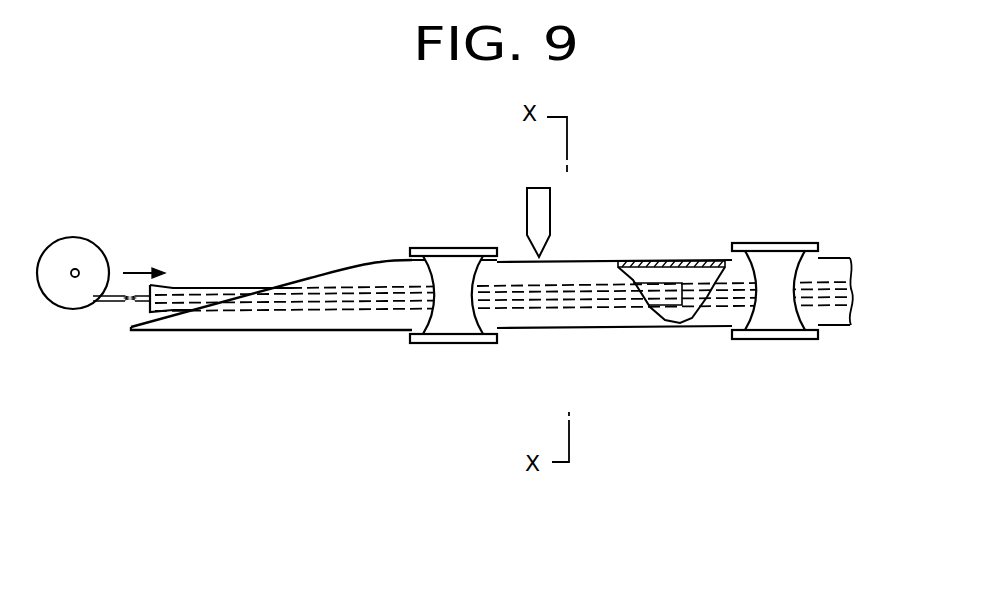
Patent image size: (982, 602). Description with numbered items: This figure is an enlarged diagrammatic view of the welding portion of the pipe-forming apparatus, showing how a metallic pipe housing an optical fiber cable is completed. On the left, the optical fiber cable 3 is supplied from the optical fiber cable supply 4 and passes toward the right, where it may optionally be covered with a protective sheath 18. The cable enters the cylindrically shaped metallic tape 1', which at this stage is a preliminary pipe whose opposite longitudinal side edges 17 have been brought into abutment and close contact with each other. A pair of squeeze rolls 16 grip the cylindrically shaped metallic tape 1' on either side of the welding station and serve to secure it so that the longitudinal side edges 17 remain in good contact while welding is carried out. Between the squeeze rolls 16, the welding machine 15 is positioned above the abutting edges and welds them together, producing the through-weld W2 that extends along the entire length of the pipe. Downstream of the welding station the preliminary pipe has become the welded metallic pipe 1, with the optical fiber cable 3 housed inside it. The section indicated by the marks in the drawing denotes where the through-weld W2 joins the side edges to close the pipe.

The metallic pipe 1 is at (504, 283).
The cylindrically shaped metallic tape 1' is at (271, 342).
The optical fiber cable 3 is at (112, 307).
The optical fiber cable supply 4 is at (83, 252).
The welding machine 15 is at (527, 220).
The squeeze rolls 16 is at (432, 248).
The longitudinal side edges 17 is at (335, 270).
The protective sheath 18 is at (229, 287).
The through-weld W2 is at (671, 244).